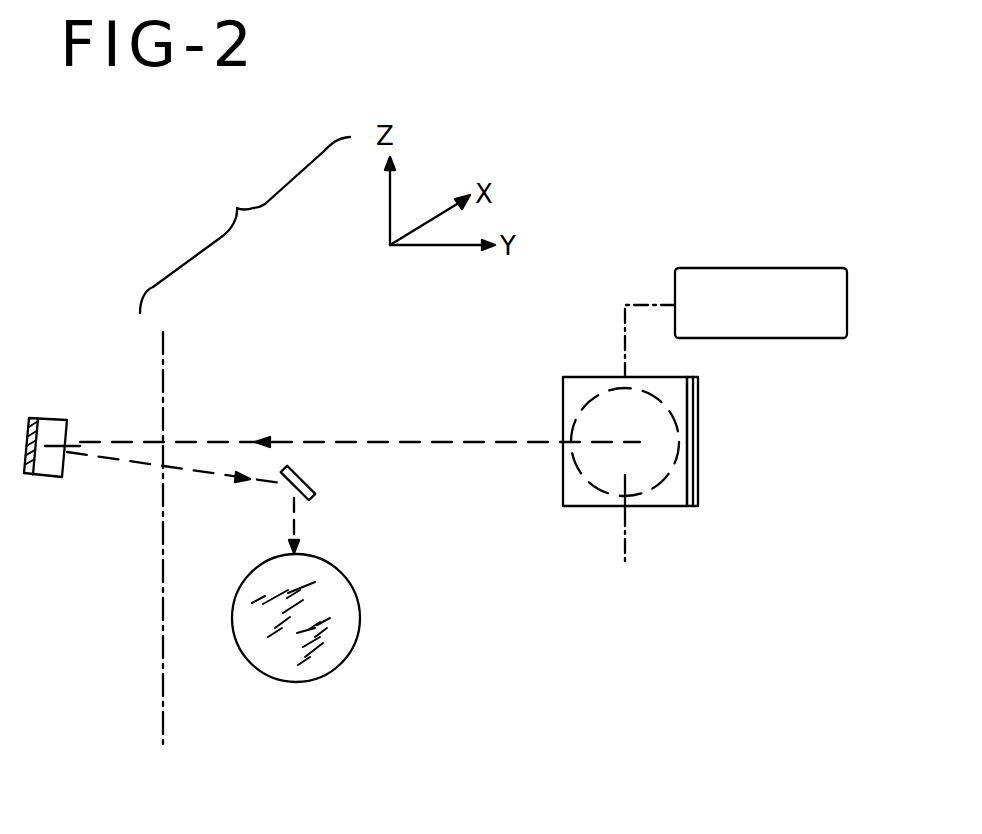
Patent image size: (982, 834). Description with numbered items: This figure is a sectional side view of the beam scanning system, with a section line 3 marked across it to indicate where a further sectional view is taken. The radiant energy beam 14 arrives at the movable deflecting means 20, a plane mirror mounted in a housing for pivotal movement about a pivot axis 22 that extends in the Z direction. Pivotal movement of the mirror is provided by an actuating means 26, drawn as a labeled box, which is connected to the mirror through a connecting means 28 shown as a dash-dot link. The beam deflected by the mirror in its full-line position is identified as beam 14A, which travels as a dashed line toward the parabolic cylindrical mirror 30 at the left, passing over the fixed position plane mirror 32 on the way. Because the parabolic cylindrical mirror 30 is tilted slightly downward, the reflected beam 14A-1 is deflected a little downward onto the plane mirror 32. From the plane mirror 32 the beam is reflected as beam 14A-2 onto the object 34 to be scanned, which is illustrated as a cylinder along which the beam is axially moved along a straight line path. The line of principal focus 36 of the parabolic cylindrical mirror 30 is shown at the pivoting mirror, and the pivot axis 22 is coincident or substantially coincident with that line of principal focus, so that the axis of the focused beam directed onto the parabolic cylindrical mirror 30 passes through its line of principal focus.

The section line 3- 3 is at (178, 347).
The radiant energy beam 14 is at (588, 402).
The focused beam deflected by mirror in full-line position 14A is at (430, 443).
The beam reflected by parabolic cylindrical mirror 14A-1 is at (205, 478).
The beam reflected from plane mirror 14A-2 is at (295, 512).
The movable deflecting means 20 is at (698, 413).
The pivot axis 22 is at (628, 556).
The actuating means 26 is at (775, 268).
The connecting means 28 is at (632, 303).
The parabolic cylindrical mirror 30 is at (52, 478).
The fixed position plane mirror 32 is at (312, 489).
The object to be scanned 34 is at (356, 598).
The line of principal focus 36 is at (622, 512).